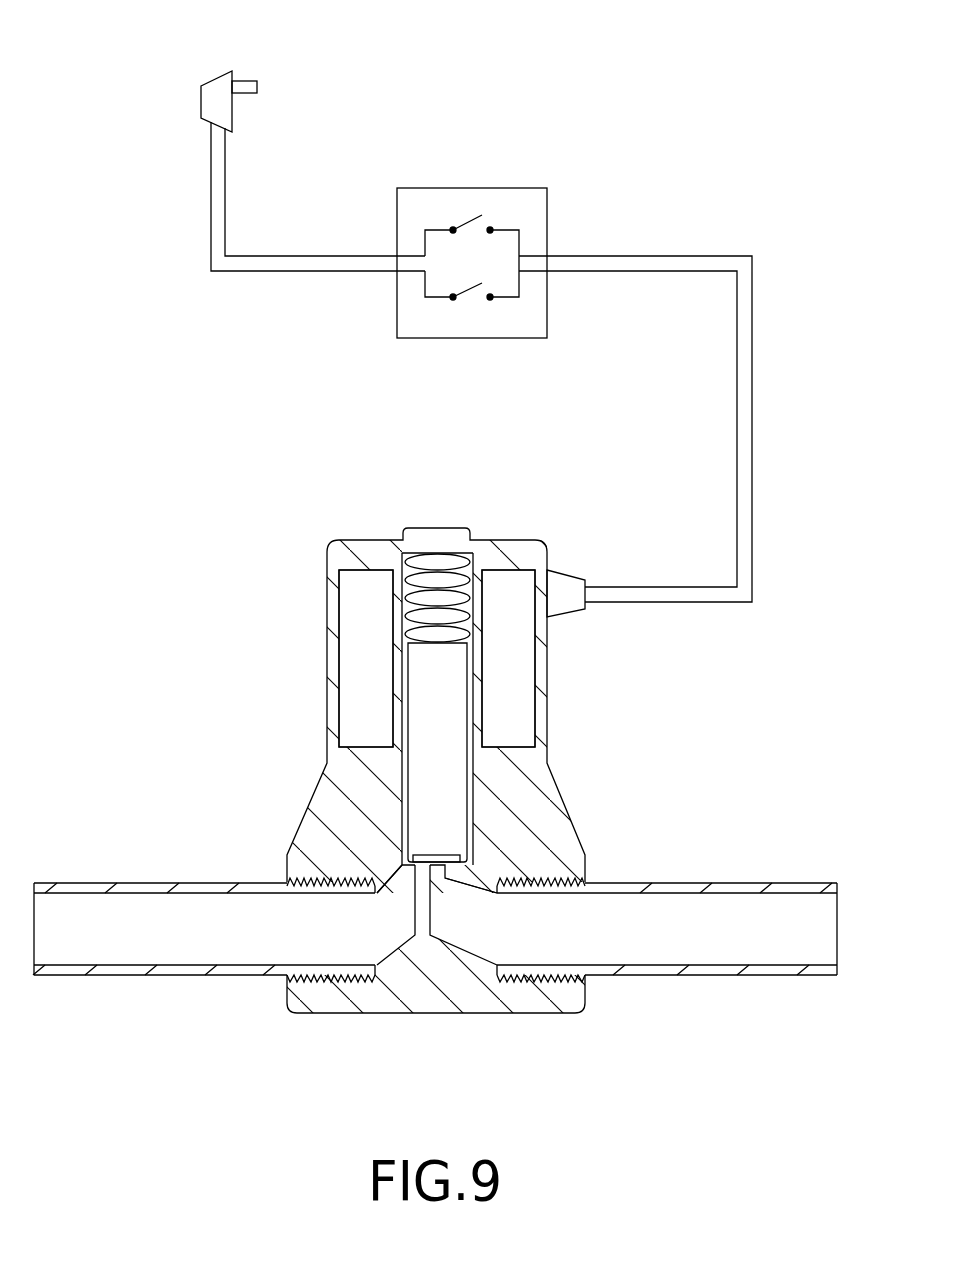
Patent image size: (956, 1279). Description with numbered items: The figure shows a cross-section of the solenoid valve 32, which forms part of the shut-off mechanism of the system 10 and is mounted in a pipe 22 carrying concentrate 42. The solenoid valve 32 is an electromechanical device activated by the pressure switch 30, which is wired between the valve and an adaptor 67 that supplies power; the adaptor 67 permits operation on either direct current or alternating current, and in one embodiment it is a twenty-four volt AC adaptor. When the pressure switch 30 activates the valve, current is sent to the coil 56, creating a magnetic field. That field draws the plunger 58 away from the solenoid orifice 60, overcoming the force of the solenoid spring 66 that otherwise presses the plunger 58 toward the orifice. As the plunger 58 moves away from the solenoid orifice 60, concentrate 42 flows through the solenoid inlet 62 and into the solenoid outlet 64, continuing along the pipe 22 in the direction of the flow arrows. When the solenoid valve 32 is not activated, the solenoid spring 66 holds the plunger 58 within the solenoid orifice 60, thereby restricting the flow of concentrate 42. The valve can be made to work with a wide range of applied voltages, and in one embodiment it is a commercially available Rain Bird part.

The fluid control system 10 is at (706, 132).
The pipe 22 is at (787, 970).
The pressure switch 30 is at (546, 188).
The solenoid valve 32 is at (745, 760).
The concentrate 42 is at (280, 932).
The coil 56 is at (360, 640).
The plunger 58 is at (442, 728).
The solenoid orifice 60 is at (441, 896).
The solenoid inlet 62 is at (390, 868).
The solenoid outlet 64 is at (500, 908).
The solenoid spring 66 is at (474, 559).
The adaptor 67 is at (213, 73).